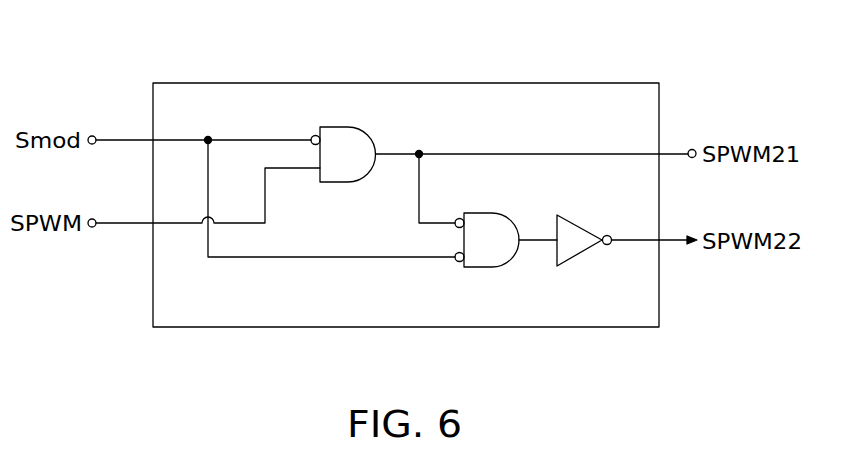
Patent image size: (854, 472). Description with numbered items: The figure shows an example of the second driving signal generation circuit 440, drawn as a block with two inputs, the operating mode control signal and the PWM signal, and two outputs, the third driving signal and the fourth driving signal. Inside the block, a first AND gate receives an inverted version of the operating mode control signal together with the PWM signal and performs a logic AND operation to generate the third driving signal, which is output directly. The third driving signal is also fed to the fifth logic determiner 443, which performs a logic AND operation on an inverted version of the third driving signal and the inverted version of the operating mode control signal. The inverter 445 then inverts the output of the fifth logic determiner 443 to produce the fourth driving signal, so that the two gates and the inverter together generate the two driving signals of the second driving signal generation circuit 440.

The second driving signal generation circuit 440 is at (244, 83).
The fifth logic determiner 443 is at (495, 268).
The inverter 445 is at (581, 254).